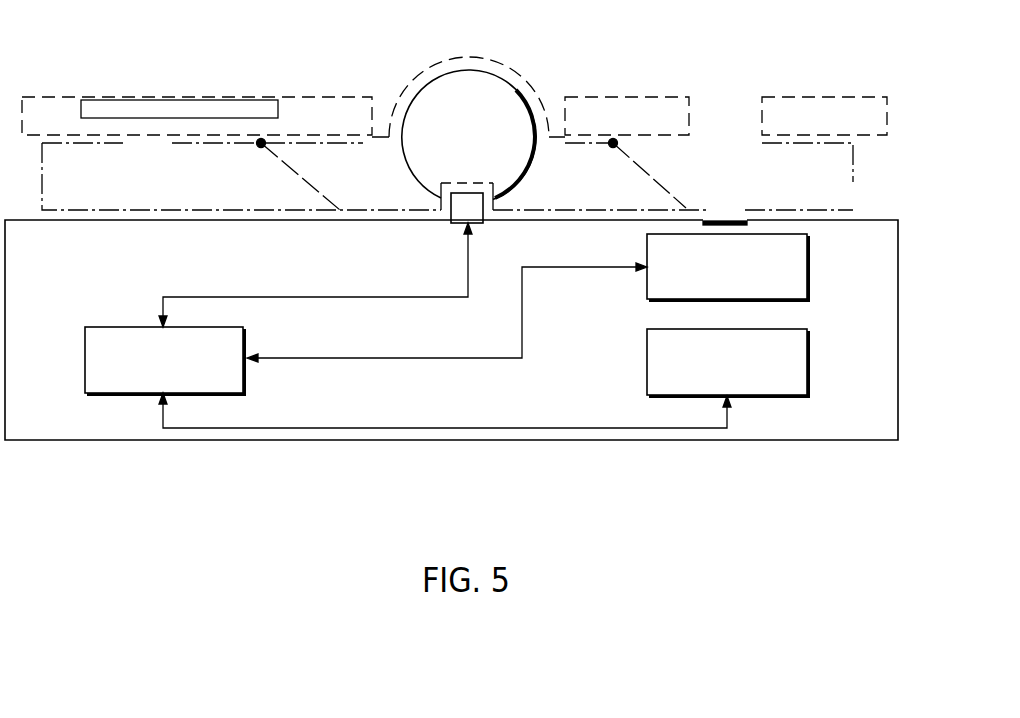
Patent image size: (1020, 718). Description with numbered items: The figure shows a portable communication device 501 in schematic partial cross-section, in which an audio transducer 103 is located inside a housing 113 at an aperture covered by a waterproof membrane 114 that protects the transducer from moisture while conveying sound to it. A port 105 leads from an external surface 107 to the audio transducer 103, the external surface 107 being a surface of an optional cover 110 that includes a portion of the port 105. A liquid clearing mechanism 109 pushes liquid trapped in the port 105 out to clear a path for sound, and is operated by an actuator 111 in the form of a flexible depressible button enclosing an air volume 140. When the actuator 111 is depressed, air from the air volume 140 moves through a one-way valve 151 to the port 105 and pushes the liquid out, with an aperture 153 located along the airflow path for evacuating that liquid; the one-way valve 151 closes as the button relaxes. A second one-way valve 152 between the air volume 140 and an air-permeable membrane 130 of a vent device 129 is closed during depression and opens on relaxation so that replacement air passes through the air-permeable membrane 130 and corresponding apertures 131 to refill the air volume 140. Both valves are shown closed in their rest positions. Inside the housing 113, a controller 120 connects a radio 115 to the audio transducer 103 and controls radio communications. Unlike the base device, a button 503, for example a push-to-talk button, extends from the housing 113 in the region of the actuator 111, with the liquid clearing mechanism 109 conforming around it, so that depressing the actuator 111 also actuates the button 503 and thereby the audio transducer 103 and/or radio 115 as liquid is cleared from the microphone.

The device 501 is at (76, 474).
The housing 113 is at (445, 440).
The liquid clearing mechanism 109 is at (48, 222).
The vent device 129 is at (100, 95).
The air-permeable membrane 130 is at (151, 90).
The apertures 131 is at (146, 155).
The air volume 140 is at (430, 97).
The actuator 111 is at (508, 58).
The cover 110 is at (626, 97).
The external surface 107 is at (675, 78).
The port 105 is at (726, 102).
The second one-way valve 152 is at (320, 180).
The one-way valve 151 is at (636, 162).
The membrane 114 is at (727, 210).
The aperture 153 is at (858, 197).
The button 503 is at (466, 208).
The controller 120 is at (85, 357).
The audio transducer 103 is at (820, 266).
The radio 115 is at (807, 365).